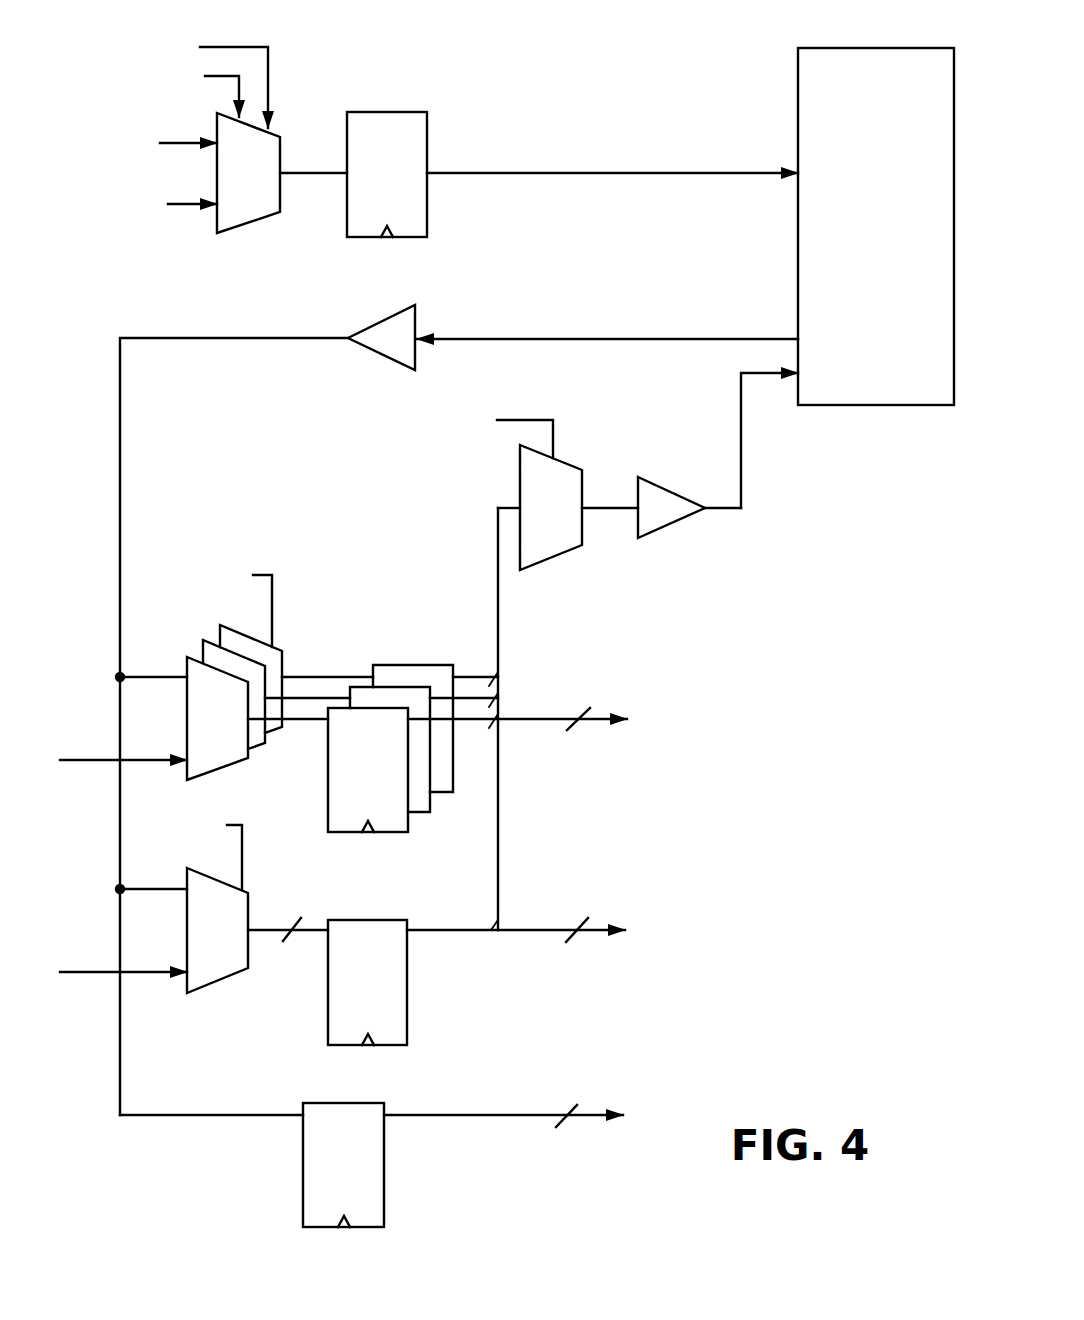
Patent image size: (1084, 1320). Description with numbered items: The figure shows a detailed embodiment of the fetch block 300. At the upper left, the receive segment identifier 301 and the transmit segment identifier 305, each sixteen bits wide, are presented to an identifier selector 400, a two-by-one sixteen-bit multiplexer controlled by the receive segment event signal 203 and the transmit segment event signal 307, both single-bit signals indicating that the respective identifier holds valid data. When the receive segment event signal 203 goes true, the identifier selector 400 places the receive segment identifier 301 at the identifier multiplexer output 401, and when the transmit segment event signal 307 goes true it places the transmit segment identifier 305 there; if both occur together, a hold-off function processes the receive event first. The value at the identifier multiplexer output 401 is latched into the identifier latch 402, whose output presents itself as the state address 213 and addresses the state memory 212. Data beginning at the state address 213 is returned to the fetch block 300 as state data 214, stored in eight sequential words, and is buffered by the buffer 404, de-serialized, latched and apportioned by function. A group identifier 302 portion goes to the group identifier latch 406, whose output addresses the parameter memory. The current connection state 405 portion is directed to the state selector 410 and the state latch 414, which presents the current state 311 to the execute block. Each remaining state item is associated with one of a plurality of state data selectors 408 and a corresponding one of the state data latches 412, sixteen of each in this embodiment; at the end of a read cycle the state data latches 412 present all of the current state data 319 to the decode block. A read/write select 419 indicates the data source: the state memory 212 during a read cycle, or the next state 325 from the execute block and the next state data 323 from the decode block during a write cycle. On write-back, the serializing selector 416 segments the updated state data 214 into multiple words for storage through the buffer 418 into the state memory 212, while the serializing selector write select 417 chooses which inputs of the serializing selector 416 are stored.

The state memory 212 is at (878, 56).
The state address 213 is at (588, 172).
The state data 214 is at (188, 338).
The receive segment event signal 203 is at (234, 85).
The receive segment identifier 301 is at (185, 208).
The group identifier 302 is at (195, 1113).
The transmit segment identifier 305 is at (185, 146).
The transmit segment event signal 307 is at (240, 45).
The current state 311 is at (538, 928).
The current state data 319 is at (540, 716).
The next state data 323 is at (82, 756).
The next state 325 is at (82, 970).
The fetch block 300 is at (836, 920).
The identifier selector 400 is at (244, 212).
The identifier multiplexer output 401 is at (308, 172).
The identifier latch 402 is at (386, 122).
The buffer 404 is at (394, 326).
The current connection state 405 is at (152, 890).
The group identifier latch 406 is at (344, 1112).
The state data selectors 408 is at (200, 724).
The state selector 410 is at (240, 910).
The state data latches 412 is at (332, 772).
The state latch 414 is at (330, 1002).
The serializing selector 416 is at (578, 484).
The serializing selector write select 417 is at (520, 418).
The buffer 418 is at (660, 492).
The read/write select 419 is at (272, 596).